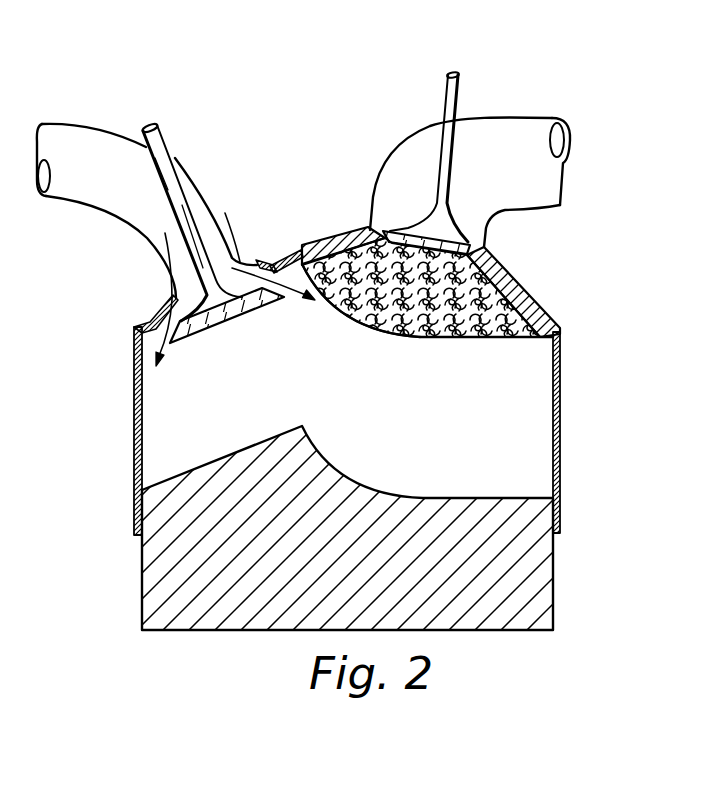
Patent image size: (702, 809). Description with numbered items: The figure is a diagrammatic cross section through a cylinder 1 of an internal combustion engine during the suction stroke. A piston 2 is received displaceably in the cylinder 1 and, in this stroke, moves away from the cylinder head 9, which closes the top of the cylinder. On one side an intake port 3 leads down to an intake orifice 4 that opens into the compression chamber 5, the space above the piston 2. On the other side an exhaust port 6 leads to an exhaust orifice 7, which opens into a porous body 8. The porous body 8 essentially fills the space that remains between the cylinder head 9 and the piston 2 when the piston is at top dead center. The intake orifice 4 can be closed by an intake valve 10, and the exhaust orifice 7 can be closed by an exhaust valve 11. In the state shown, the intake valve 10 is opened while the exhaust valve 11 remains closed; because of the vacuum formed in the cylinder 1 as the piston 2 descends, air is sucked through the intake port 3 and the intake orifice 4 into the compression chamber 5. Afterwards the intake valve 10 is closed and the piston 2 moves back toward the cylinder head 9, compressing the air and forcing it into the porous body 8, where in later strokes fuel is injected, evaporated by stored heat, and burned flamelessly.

The cylinder 1 is at (561, 513).
The piston 2 is at (480, 582).
The intake port 3 is at (103, 210).
The intake orifice 4 is at (275, 263).
The compression chamber 5 is at (463, 422).
The exhaust port 6 is at (530, 118).
The exhaust orifice 7 is at (460, 270).
The porous body 8 is at (533, 290).
The cylinder head 9 is at (324, 243).
The intake valve 10 is at (172, 143).
The exhaust valve 11 is at (441, 108).